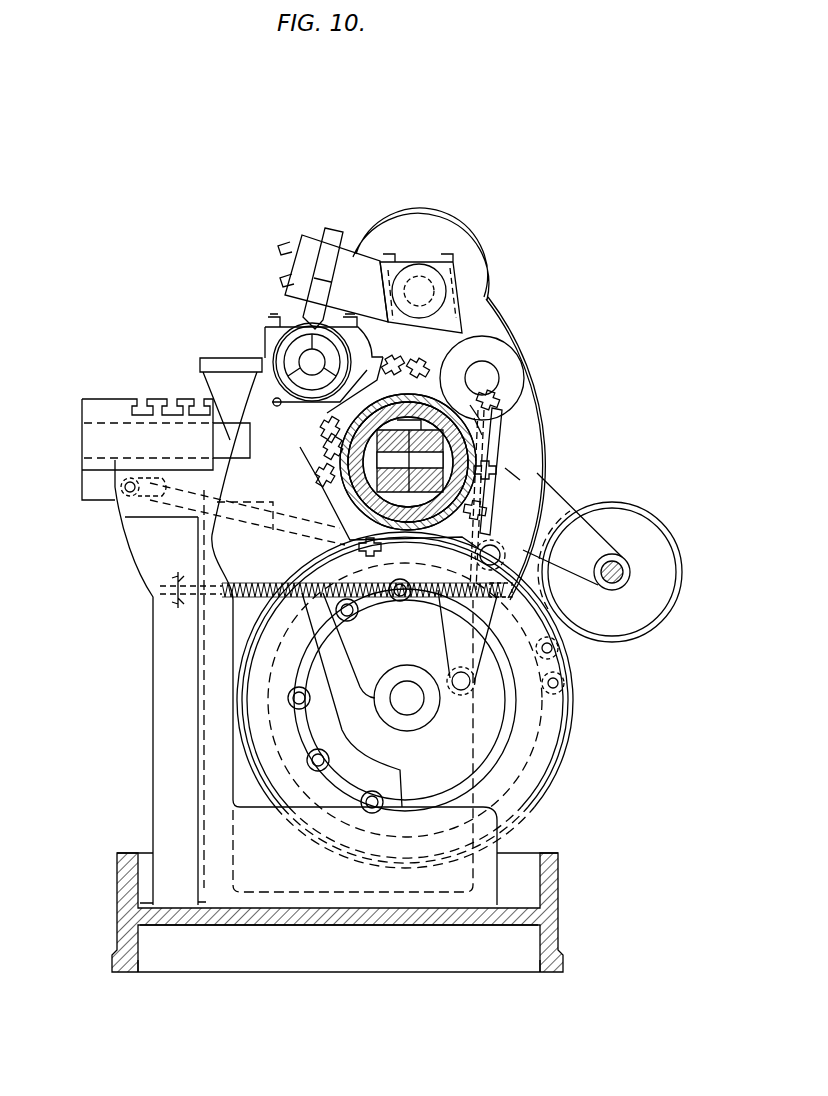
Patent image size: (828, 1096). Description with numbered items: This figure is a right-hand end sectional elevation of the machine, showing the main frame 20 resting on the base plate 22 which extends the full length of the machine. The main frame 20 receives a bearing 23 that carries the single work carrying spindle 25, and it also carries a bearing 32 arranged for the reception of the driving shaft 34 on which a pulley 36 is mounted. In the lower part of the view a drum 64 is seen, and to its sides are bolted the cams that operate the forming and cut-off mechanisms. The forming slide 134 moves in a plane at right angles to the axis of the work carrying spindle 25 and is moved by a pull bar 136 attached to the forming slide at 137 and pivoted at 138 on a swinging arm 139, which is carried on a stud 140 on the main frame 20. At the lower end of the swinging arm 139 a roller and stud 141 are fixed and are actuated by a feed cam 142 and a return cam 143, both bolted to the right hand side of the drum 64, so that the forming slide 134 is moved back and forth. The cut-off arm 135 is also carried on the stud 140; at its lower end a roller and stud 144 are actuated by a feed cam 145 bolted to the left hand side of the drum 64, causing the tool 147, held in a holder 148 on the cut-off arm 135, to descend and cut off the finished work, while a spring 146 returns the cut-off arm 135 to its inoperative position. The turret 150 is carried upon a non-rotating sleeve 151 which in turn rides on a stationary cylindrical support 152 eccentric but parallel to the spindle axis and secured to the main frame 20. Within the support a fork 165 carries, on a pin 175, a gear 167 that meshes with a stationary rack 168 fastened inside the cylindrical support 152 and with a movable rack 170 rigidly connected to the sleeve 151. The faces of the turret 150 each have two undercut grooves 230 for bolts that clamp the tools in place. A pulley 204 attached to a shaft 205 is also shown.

The main frame 20 is at (160, 705).
The base plate 22 is at (118, 902).
The bearing 23 is at (268, 333).
The work carrying spindle 25 is at (277, 352).
The bearing 32 is at (421, 290).
The driving shaft 34 is at (438, 281).
The pulley 36 is at (480, 297).
The drum 64 is at (523, 795).
The forming slide 134 is at (95, 398).
The cut-off arm 135 is at (486, 321).
The pull bar 136 is at (309, 499).
The attachment point 137 is at (126, 487).
The pivot 138 is at (540, 523).
The swinging arm 139 is at (524, 476).
The stud 140 is at (485, 378).
The roller and stud 141 is at (460, 684).
The feed cam 142 is at (349, 696).
The return cam 143 is at (330, 733).
The roller and stud 144 is at (512, 590).
The feed cam 145 is at (573, 693).
The spring 146 is at (254, 580).
The tool 147 is at (315, 248).
The holder 148 is at (345, 258).
The turret 150 is at (330, 411).
The non-rotating sleeve 151 is at (330, 424).
The stationary cylindrical support 152 is at (332, 444).
The fork 165 is at (326, 471).
The gear 167 is at (484, 421).
The stationary rack 168 is at (514, 477).
The movable rack 170 is at (481, 403).
The pin 175 is at (486, 452).
The pulley 204 is at (677, 548).
The shaft 205 is at (630, 571).
The undercut grooves 230 is at (416, 368).